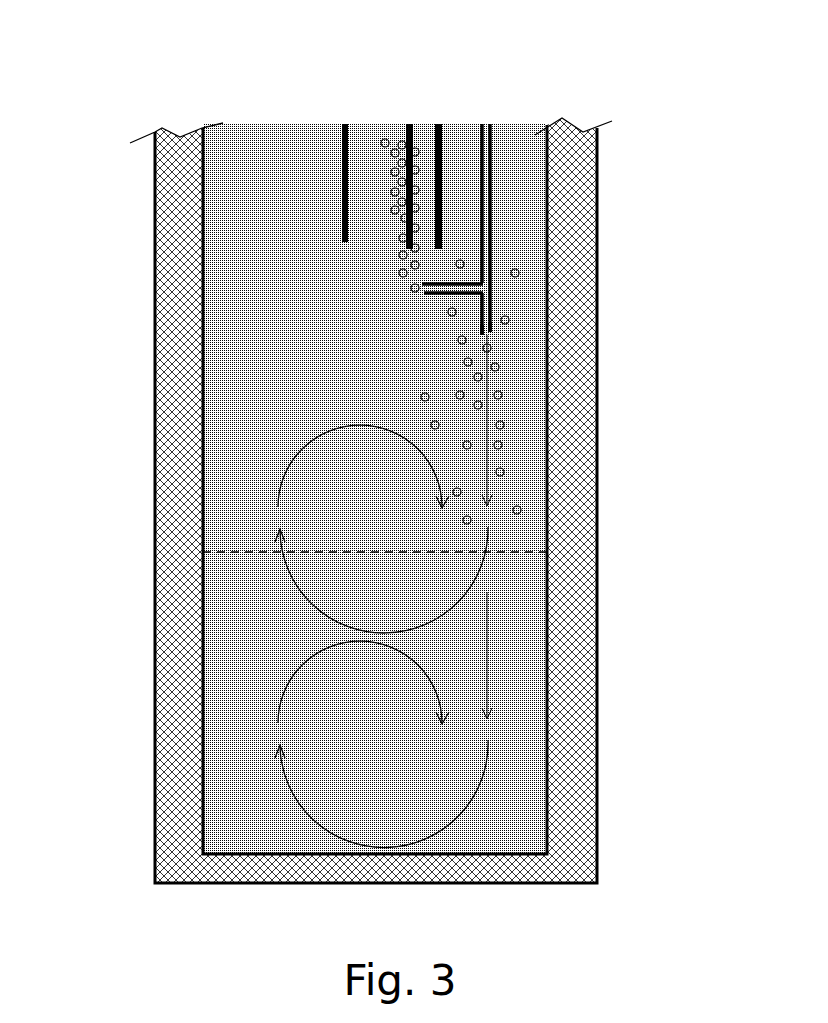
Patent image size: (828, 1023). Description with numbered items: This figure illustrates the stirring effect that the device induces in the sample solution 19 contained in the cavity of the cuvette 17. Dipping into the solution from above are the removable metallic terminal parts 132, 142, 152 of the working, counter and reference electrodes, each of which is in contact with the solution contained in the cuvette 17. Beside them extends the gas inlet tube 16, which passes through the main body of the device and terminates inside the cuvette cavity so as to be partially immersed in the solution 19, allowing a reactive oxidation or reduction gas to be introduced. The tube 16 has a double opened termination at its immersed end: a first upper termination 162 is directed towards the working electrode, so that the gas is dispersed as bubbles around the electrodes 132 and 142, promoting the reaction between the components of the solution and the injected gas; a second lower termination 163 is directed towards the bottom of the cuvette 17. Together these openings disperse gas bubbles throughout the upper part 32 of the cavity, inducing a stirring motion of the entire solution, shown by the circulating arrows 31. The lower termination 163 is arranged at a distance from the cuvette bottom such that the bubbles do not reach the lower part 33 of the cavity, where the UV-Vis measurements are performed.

The gas inlet tube 16 is at (483, 217).
The cuvette 17 is at (160, 290).
The solution 19 is at (375, 488).
The arrows 31 is at (318, 433).
The upper part of the cavity 32 is at (235, 472).
The lower part of the cavity 33 is at (218, 663).
The removable metallic terminal part of the working electrode 132 is at (408, 124).
The removable metallic terminal part of the counter electrode 142 is at (440, 128).
The removable metallic terminal part of the reference electrode 152 is at (345, 124).
The first upper termination 162 is at (422, 292).
The second lower termination 163 is at (492, 332).